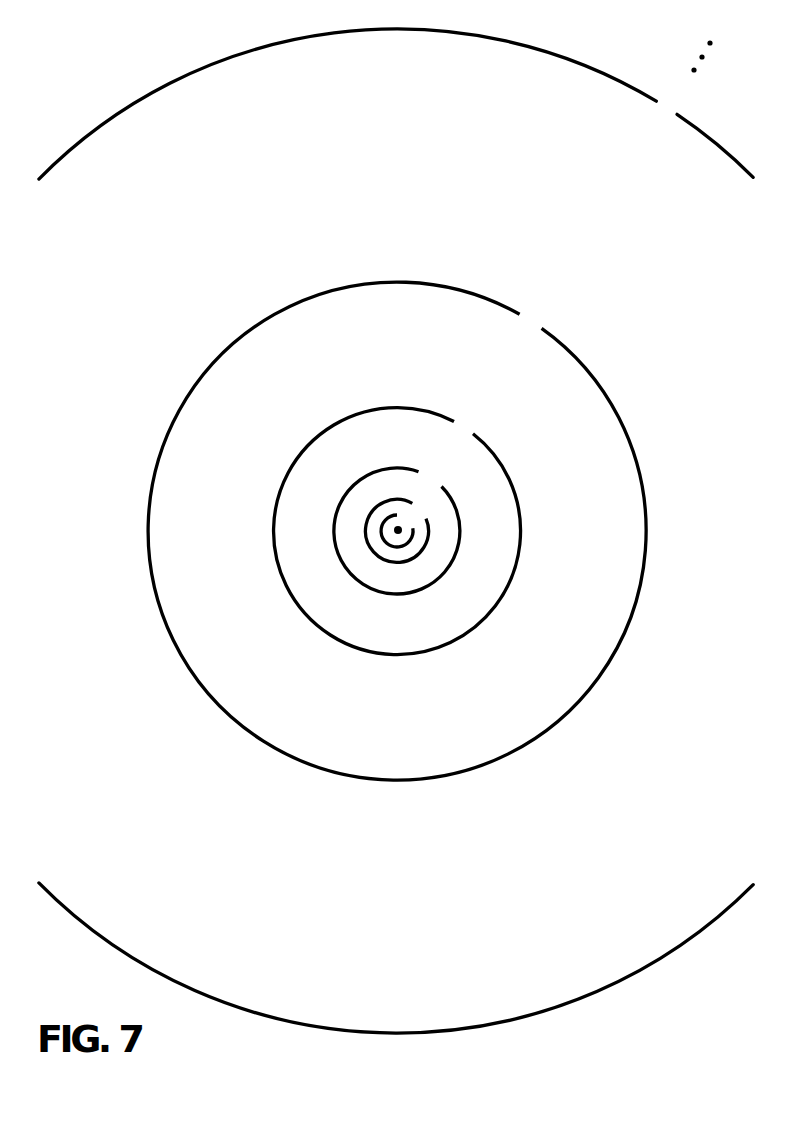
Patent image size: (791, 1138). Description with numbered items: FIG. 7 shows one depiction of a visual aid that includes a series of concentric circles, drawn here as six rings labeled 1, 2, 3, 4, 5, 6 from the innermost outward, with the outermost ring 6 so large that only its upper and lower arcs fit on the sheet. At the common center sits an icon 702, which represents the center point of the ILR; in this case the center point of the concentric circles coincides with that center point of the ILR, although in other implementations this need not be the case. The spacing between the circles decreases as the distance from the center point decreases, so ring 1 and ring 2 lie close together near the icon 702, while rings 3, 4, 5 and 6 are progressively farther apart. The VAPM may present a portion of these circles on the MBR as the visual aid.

The first ring 1 is at (397, 525).
The second ring 2 is at (398, 530).
The third ring 3 is at (397, 531).
The fourth ring 4 is at (397, 531).
The fifth ring 5 is at (397, 531).
The sixth ring 6 is at (396, 531).
The icon 702 is at (404, 532).